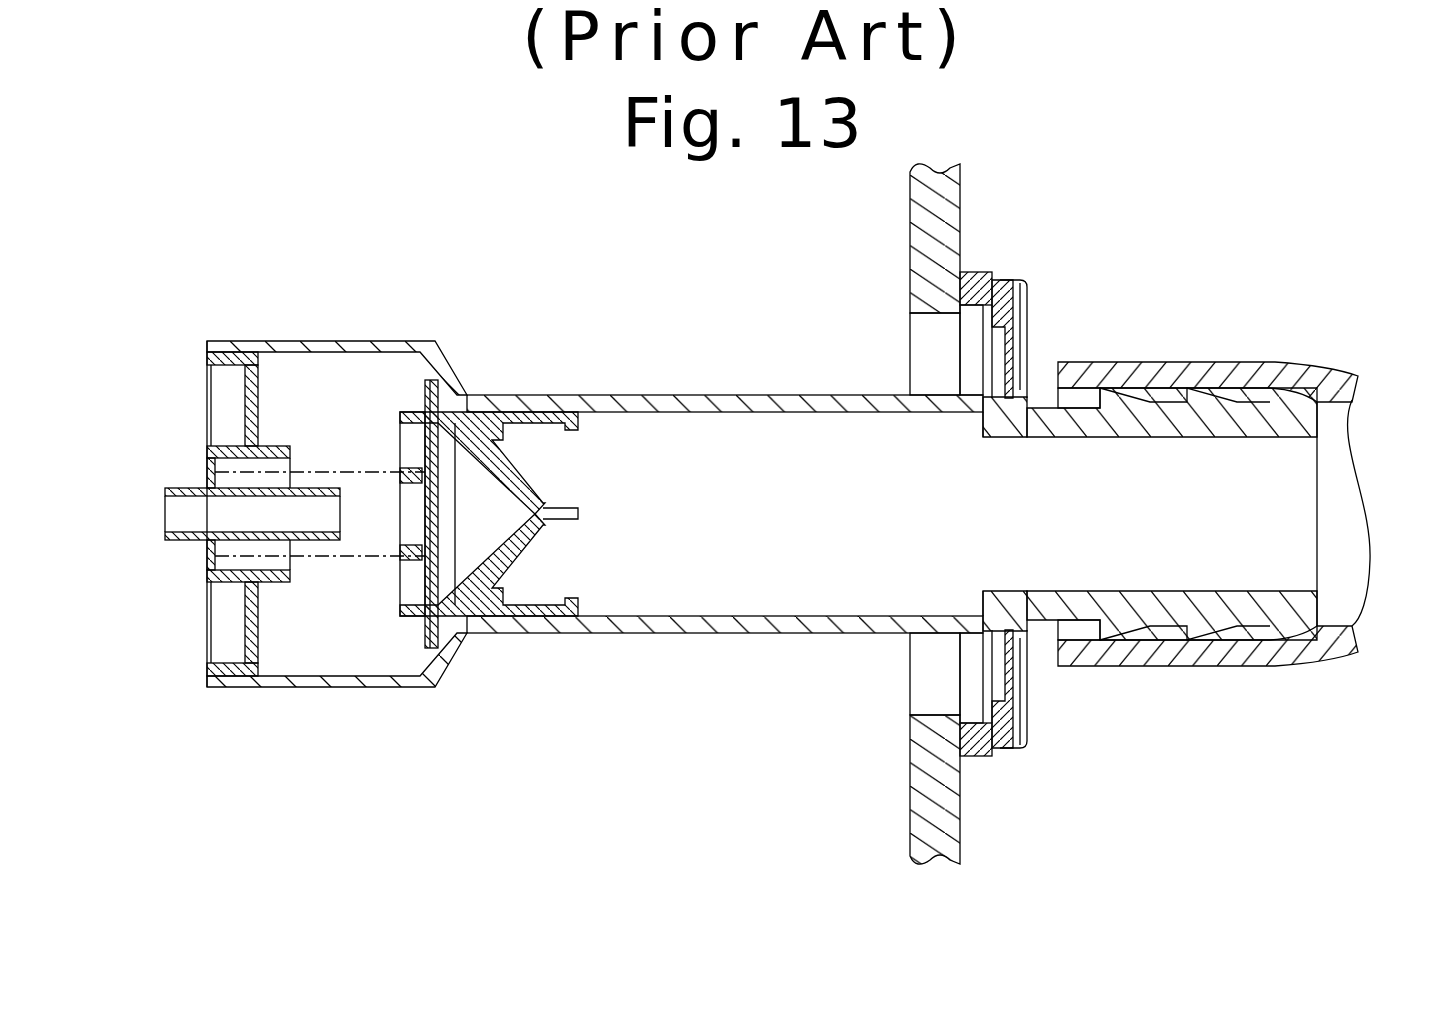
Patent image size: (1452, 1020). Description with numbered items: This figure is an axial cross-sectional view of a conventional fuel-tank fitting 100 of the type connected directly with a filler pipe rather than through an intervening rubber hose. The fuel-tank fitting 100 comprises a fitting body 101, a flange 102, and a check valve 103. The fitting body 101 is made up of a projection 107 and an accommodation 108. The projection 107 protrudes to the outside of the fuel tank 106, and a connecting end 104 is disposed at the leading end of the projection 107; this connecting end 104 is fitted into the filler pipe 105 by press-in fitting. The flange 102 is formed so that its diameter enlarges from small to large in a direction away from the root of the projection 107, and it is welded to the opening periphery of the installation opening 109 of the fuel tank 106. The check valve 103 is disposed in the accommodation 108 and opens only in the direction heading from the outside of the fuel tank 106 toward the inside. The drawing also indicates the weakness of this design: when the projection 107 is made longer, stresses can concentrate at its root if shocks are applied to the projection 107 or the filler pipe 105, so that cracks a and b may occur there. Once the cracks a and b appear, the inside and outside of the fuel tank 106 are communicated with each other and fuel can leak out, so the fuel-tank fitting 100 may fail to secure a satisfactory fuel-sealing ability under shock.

The fuel-tank fitting 100 is at (728, 278).
The fitting body 101 is at (740, 404).
The flange 102 is at (1023, 307).
The check valve 103 is at (427, 432).
The connecting end 104 is at (1290, 617).
The filler pipe 105 is at (1253, 377).
The fuel tank 106 is at (932, 217).
The projection 107 is at (1310, 793).
The accommodation 108 is at (958, 790).
The installation opening 109 is at (932, 318).
The crack a is at (1023, 380).
The crack b is at (1023, 650).